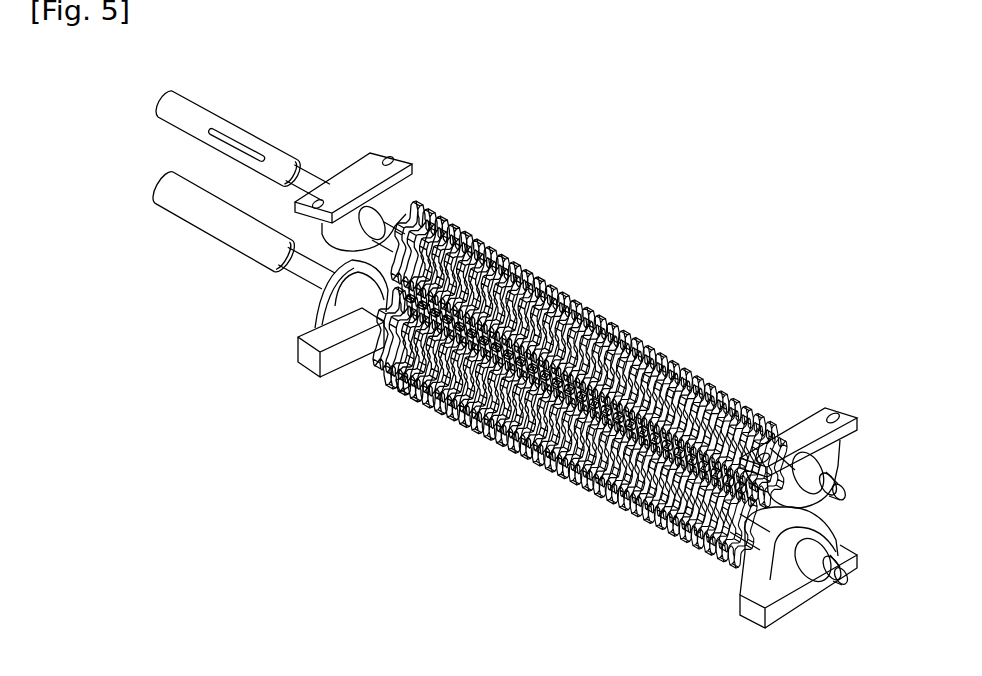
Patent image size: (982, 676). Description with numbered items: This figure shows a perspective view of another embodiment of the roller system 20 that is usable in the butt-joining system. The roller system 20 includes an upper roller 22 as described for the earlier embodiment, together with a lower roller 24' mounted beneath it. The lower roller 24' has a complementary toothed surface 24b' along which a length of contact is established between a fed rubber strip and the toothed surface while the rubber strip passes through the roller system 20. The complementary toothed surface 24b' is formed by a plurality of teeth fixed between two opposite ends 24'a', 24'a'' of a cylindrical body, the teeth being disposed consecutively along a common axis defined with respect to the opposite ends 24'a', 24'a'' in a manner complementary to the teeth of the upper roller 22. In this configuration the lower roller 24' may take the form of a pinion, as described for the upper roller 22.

The roller system 20 is at (590, 240).
The upper roller 22 is at (688, 343).
The lower roller 24' is at (481, 437).
The opposite end 24'a' is at (296, 338).
The opposite end 24'a'' is at (715, 577).
The complementary toothed surface 24b' is at (370, 436).